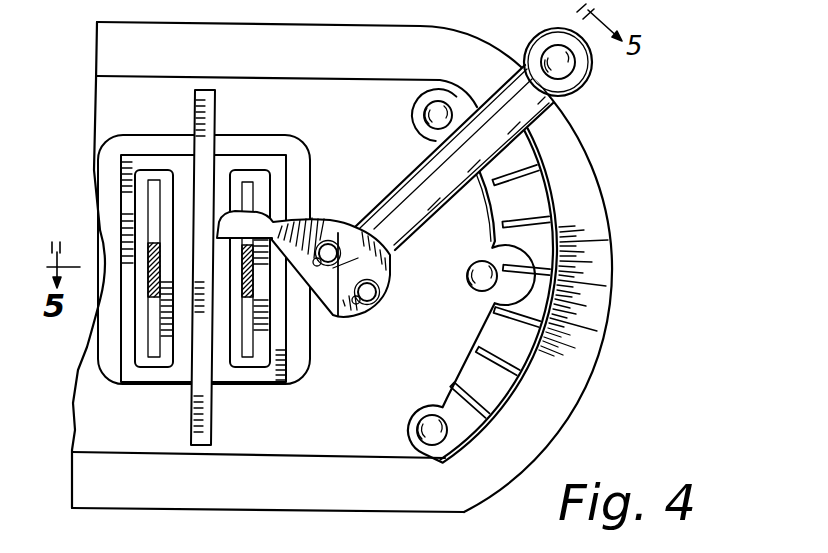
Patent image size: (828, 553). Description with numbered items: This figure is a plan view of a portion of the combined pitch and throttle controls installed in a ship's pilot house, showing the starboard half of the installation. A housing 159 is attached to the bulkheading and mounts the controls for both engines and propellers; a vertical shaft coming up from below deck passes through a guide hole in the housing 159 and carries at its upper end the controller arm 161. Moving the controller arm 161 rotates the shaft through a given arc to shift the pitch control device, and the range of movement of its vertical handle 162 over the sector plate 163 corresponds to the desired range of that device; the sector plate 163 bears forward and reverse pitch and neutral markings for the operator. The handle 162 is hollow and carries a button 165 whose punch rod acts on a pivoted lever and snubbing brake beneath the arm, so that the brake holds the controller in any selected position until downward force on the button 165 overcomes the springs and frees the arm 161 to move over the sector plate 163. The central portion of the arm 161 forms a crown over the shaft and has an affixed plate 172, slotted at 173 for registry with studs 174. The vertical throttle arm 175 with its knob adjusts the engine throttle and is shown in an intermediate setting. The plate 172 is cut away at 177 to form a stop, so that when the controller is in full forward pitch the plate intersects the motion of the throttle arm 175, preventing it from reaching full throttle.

The housing 159 is at (541, 430).
The controller arm 161 is at (441, 192).
The handle 162 is at (588, 72).
The sector plate 163 is at (450, 402).
The button 165 is at (566, 76).
The plate 172 is at (380, 292).
The slot 173 is at (392, 258).
The studs 174 is at (337, 317).
The throttle arm 175 is at (256, 298).
The cut-away stop 177 is at (275, 224).